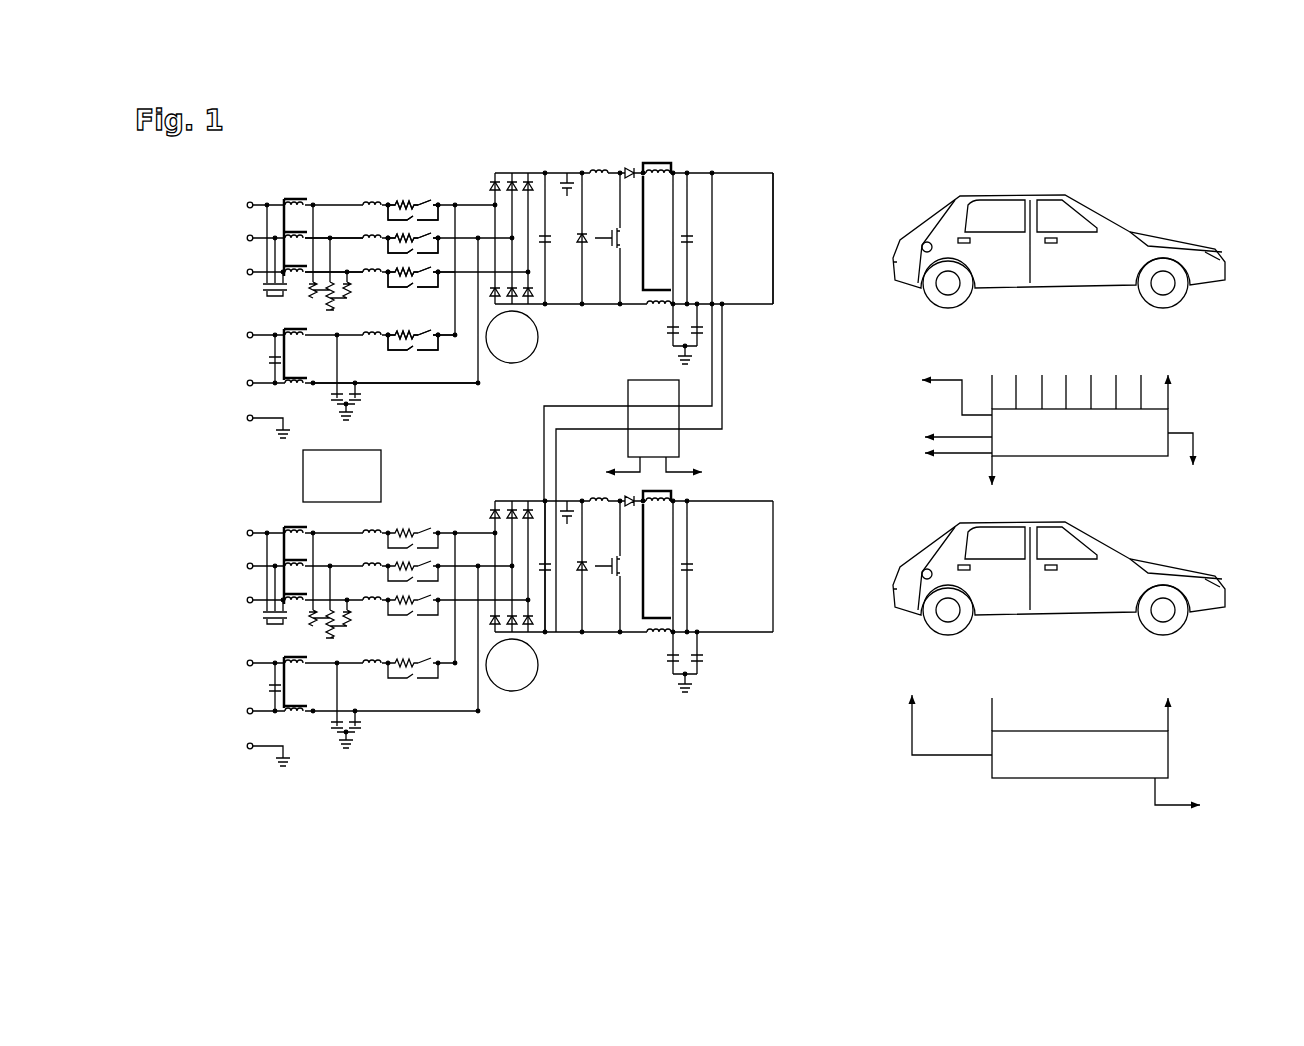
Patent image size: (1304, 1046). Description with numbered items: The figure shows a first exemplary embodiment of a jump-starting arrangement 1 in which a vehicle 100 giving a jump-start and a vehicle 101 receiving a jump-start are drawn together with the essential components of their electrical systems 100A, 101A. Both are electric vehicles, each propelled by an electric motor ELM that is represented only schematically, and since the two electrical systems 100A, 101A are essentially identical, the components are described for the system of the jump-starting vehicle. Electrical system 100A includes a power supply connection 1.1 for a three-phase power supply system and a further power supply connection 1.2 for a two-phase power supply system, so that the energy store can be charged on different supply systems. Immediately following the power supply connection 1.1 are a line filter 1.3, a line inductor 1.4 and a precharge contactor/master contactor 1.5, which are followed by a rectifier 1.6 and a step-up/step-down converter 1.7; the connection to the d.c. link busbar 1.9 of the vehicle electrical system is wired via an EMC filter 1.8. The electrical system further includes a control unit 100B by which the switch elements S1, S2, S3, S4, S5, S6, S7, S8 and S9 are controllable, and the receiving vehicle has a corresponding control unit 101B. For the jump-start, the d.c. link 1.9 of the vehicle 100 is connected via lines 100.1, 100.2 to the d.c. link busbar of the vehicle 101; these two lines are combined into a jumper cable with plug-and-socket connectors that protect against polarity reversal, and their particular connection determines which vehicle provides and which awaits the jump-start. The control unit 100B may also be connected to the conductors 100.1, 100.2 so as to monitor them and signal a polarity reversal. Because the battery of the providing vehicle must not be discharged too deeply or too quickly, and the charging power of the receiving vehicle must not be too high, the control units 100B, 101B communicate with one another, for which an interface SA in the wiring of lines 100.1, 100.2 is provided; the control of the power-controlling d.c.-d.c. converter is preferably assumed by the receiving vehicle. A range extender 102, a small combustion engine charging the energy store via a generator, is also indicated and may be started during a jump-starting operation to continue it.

The charging system 1 is at (455, 437).
The power supply connection 1.1 is at (267, 200).
The power supply connection 1.2 is at (262, 363).
The line filter 1.3 is at (347, 296).
The line inductor 1.4 is at (373, 268).
The precharge contactor/master contactor 1.5 is at (421, 200).
The rectifier 1.6 is at (512, 170).
The step-up/step-down converter 1.7 is at (598, 167).
The EMC filter 1.8 is at (662, 160).
The d.c. link busbar 1.9 is at (735, 218).
The electrical system 100A is at (440, 118).
The electrical system 101A is at (443, 780).
The range extender 102 is at (364, 489).
The vehicle 100 is at (1059, 251).
The vehicle 101 is at (1059, 578).
The control unit 100B is at (1152, 428).
The control unit 101B is at (1152, 752).
The line 100.1 is at (585, 404).
The line 100.2 is at (724, 410).
The interface SA is at (652, 380).
The electric motor ELM is at (512, 353).
The switch element S1 is at (427, 200).
The switch element S2 is at (334, 226).
The switch element S3 is at (427, 233).
The switch element S4 is at (335, 259).
The switch element S5 is at (427, 266).
The switch element S6 is at (442, 295).
The switch element S7 is at (413, 330).
The switch element S8 is at (429, 358).
The switch element S9 is at (395, 396).